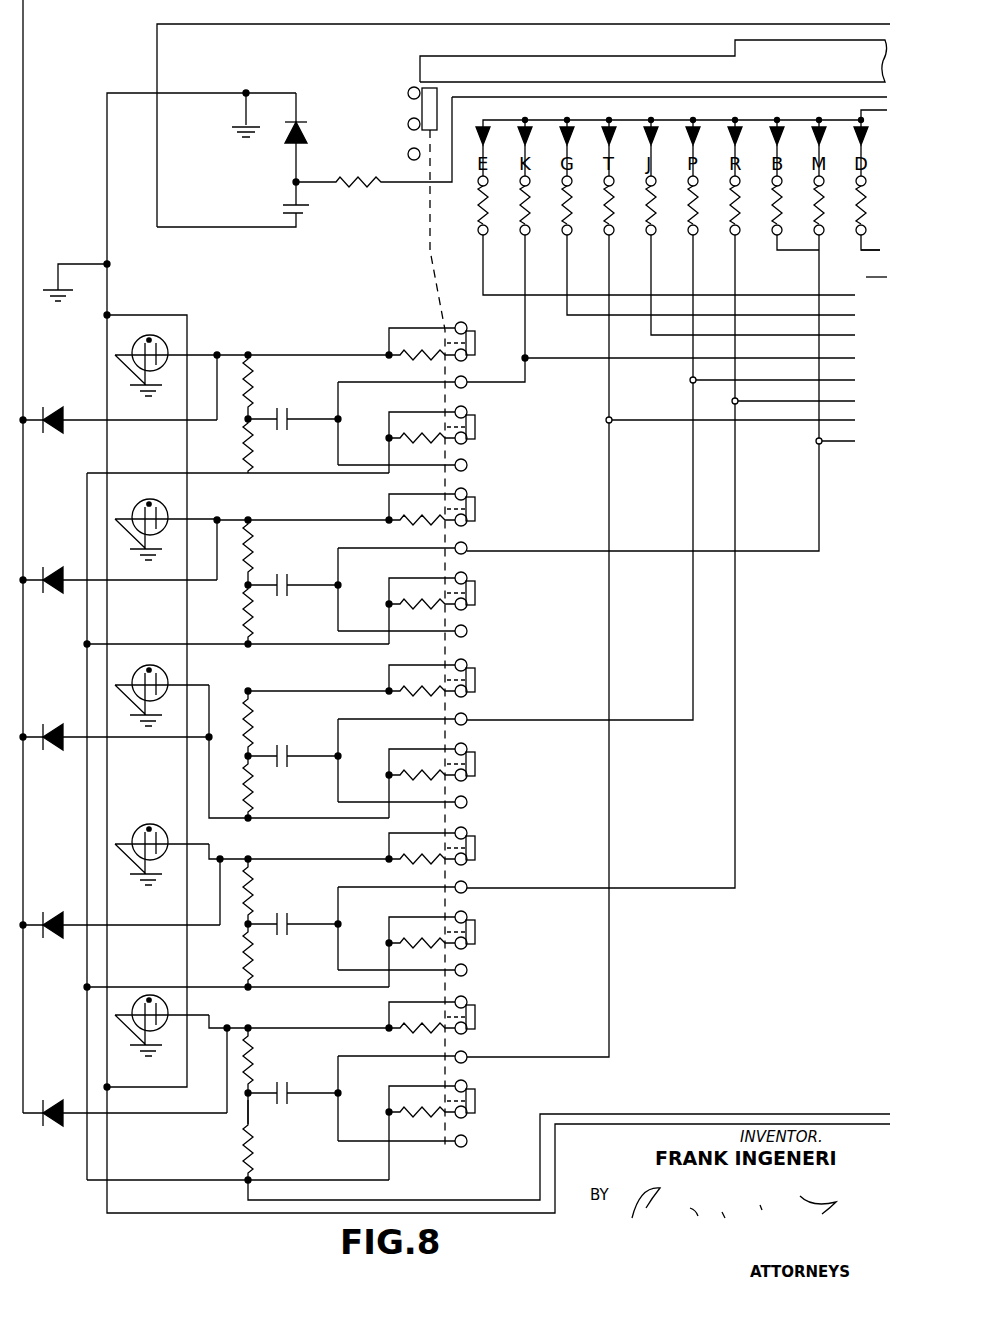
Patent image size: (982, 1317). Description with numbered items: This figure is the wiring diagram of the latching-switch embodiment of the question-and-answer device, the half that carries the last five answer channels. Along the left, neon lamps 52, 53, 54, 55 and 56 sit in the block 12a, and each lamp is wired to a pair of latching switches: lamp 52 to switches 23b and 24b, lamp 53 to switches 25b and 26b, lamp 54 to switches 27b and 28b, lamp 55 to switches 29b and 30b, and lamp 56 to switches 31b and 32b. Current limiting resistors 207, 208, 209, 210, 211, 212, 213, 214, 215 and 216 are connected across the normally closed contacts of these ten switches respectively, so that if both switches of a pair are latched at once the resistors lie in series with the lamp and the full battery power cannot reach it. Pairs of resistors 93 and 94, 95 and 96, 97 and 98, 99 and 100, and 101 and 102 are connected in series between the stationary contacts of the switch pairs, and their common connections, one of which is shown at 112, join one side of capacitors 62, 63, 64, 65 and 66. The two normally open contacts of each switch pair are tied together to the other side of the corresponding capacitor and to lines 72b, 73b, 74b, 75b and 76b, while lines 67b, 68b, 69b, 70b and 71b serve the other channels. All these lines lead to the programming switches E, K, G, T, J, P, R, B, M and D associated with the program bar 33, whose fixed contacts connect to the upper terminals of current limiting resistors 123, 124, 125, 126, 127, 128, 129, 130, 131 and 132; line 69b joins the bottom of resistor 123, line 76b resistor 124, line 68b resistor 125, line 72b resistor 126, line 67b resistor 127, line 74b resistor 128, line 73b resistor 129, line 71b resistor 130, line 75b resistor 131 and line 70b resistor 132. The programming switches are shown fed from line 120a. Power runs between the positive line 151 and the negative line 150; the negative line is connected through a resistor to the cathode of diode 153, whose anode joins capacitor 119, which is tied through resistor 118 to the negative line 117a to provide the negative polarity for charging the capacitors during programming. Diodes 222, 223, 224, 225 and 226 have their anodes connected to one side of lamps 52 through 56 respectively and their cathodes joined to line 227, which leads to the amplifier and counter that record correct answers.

The positive line 151 is at (303, 24).
The negative line 150 is at (107, 128).
The diode 153 is at (302, 142).
The resistor 118 is at (348, 184).
The capacitor 119 is at (309, 216).
The program bar 33 is at (798, 70).
The conductor 117a is at (623, 100).
The conductor bus 120a is at (669, 117).
The current limiting resistor 123 is at (480, 208).
The current limiting resistor 124 is at (522, 208).
The current limiting resistor 125 is at (564, 208).
The current limiting resistor 126 is at (606, 208).
The current limiting resistor 127 is at (648, 208).
The current limiting resistor 128 is at (690, 208).
The current limiting resistor 129 is at (732, 208).
The current limiting resistor 130 is at (774, 208).
The current limiting resistor 131 is at (815, 210).
The current limiting resistor 132 is at (858, 205).
The line 71b is at (872, 257).
The line 70b is at (866, 277).
The line 69b is at (855, 295).
The line 68b is at (855, 315).
The line 67b is at (855, 335).
The line 76b is at (855, 358).
The line 74b is at (855, 380).
The line 73b is at (855, 401).
The line 72b is at (855, 420).
The line 75b is at (855, 441).
The line 227 is at (25, 263).
The diode 226 is at (62, 434).
The diode 225 is at (62, 594).
The diode 224 is at (62, 751).
The diode 223 is at (62, 939).
The diode 222 is at (62, 1127).
The neon lamp 56 is at (132, 339).
The neon lamp 55 is at (168, 510).
The neon lamp 54 is at (169, 675).
The neon lamp 53 is at (143, 823).
The neon lamp 52 is at (143, 994).
The sensing unit 12a is at (163, 776).
The resistor 102 is at (255, 387).
The resistor 101 is at (257, 449).
The resistor 100 is at (255, 553).
The resistor 99 is at (257, 618).
The resistor 98 is at (253, 728).
The resistor 97 is at (255, 789).
The resistor 96 is at (253, 896).
The resistor 95 is at (255, 961).
The resistor 94 is at (254, 1064).
The resistor 93 is at (252, 1151).
The common connection 112 is at (251, 1116).
The capacitor 66 is at (288, 416).
The capacitor 65 is at (288, 582).
The capacitor 64 is at (288, 753).
The capacitor 63 is at (288, 921).
The capacitor 62 is at (288, 1090).
The current limiting resistor 216 is at (424, 360).
The current limiting resistor 215 is at (396, 440).
The current limiting resistor 214 is at (400, 525).
The current limiting resistor 213 is at (400, 607).
The current limiting resistor 212 is at (400, 693).
The current limiting resistor 211 is at (398, 777).
The current limiting resistor 210 is at (397, 861).
The current limiting resistor 209 is at (398, 937).
The current limiting resistor 208 is at (389, 1026).
The current limiting resistor 207 is at (397, 1122).
The latching switch 32b is at (491, 359).
The latching switch 31b is at (491, 443).
The latching switch 30b is at (491, 525).
The latching switch 29b is at (491, 609).
The latching switch 28b is at (491, 696).
The latching switch 27b is at (491, 780).
The latching switch 26b is at (491, 864).
The latching switch 25b is at (491, 948).
The latching switch 24b is at (491, 1033).
The latching switch 23b is at (491, 1117).